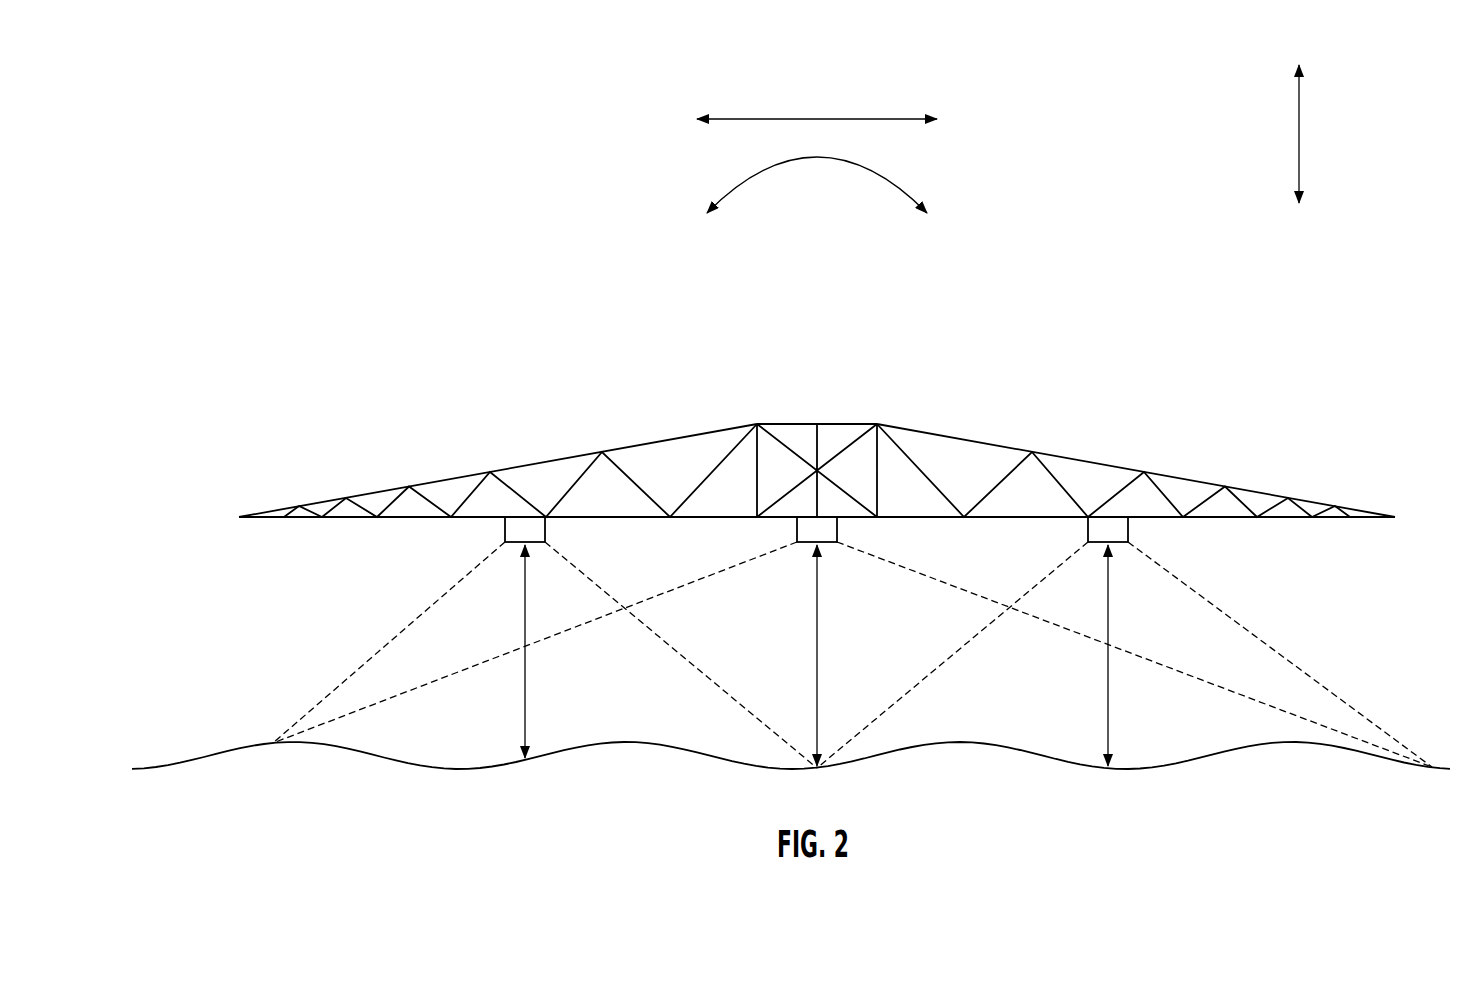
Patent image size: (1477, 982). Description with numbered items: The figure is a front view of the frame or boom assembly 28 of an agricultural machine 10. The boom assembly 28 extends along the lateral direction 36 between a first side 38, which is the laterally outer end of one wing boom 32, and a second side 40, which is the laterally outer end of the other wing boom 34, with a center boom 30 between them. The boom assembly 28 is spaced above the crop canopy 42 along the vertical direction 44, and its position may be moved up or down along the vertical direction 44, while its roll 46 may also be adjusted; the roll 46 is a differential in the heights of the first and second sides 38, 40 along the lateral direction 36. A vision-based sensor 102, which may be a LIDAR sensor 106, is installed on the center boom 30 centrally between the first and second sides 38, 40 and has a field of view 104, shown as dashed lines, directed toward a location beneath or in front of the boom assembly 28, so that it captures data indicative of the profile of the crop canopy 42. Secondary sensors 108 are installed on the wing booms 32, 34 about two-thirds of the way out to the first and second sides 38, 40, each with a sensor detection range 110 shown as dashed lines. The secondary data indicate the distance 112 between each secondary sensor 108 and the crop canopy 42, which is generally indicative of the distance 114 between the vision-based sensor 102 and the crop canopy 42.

The agricultural machine 10 is at (190, 262).
The boom assembly 28 is at (600, 405).
The center boom 30 is at (837, 423).
The wing boom 32 is at (1078, 460).
The wing boom 34 is at (527, 460).
The lateral direction 36 is at (800, 119).
The first side 38 is at (1395, 505).
The second side 40 is at (268, 477).
The crop canopy 42 is at (220, 745).
The vertical direction 44 is at (1299, 145).
The roll 46 is at (810, 158).
The vision-based sensor 102 is at (842, 522).
The field of view 104 is at (957, 588).
The LIDAR sensor 106 is at (797, 528).
The secondary sensor 108 is at (548, 522).
The sensor detection range 110 is at (437, 600).
The distance 112 is at (525, 700).
The distance 114 is at (818, 625).